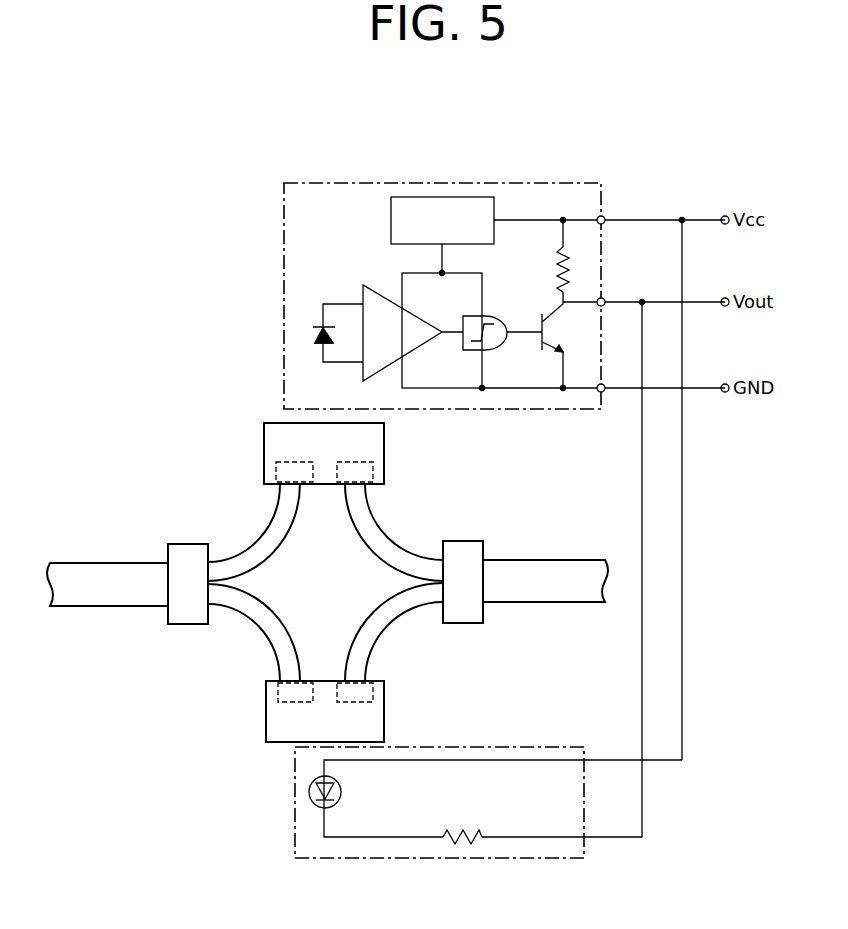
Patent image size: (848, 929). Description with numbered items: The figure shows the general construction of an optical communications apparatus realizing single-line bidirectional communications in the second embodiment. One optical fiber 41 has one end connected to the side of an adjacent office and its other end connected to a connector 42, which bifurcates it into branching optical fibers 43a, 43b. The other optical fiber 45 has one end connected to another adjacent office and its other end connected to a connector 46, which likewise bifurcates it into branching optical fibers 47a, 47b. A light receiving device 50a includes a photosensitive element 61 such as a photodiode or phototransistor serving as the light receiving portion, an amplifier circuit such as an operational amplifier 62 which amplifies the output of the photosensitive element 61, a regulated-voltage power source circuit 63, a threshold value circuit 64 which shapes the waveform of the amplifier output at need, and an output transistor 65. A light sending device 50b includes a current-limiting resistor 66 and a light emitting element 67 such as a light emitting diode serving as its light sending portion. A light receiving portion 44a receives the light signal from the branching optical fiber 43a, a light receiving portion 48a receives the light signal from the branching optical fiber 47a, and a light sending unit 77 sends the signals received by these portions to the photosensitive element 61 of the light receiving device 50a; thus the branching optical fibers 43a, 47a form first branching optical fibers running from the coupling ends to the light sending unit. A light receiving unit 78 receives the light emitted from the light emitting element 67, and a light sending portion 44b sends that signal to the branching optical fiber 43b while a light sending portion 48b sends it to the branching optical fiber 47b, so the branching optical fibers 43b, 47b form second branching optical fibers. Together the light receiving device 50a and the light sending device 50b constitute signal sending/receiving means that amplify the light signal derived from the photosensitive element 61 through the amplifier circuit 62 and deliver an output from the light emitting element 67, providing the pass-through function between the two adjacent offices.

The optical fiber 41 is at (553, 568).
The connector 42 is at (462, 543).
The branching optical fiber 43a is at (375, 545).
The branching optical fiber 43b is at (390, 608).
The light receiving portion 44a is at (367, 462).
The light sending portion 44b is at (385, 692).
The optical fiber 45 is at (103, 568).
The connector 46 is at (190, 555).
The branching optical fiber 47a is at (262, 553).
The branching optical fiber 47b is at (262, 612).
The light receiving portion 48a is at (277, 463).
The light sending portion 48b is at (278, 697).
The light receiving device 50a is at (505, 410).
The light sending device 50b is at (295, 837).
The photosensitive element 61 is at (313, 338).
The amplifier circuit 62 is at (363, 297).
The regulated-voltage power source circuit 63 is at (418, 197).
The threshold value circuit 64 is at (507, 316).
The output transistor 65 is at (563, 333).
The current-limiting resistor 66 is at (460, 832).
The light emitting element 67 is at (308, 790).
The light sending unit 77 is at (278, 423).
The light receiving unit 78 is at (265, 718).